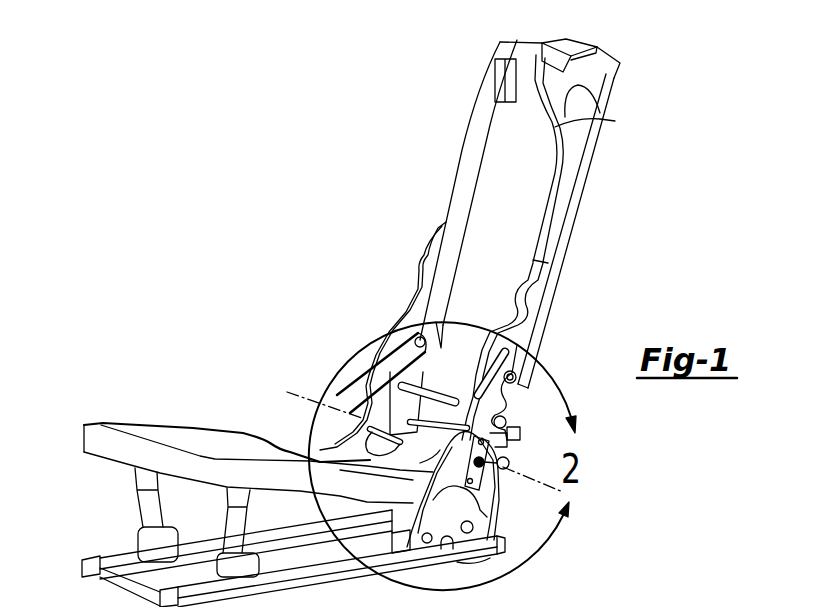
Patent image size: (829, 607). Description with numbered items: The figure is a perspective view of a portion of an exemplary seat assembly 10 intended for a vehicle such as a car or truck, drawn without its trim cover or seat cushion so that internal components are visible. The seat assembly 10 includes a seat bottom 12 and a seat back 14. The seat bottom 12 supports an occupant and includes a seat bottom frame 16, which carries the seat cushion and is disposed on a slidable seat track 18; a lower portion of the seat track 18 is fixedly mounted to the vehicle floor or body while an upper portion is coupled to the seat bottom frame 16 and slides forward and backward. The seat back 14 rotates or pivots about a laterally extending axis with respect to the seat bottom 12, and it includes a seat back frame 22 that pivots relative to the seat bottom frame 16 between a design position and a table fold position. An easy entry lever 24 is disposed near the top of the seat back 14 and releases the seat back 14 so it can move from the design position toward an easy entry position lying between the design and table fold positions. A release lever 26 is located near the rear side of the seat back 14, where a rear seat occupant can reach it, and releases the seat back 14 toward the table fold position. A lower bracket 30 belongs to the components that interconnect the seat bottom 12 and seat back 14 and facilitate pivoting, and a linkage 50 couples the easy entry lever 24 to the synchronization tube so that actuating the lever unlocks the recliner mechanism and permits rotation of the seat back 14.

The seat assembly 10 is at (295, 205).
The seat bottom 12 is at (67, 415).
The seat back 14 is at (625, 66).
The seat bottom frame 16 is at (191, 423).
The seat track 18 is at (82, 563).
The seat back frame 22 is at (470, 155).
The easy entry lever 24 is at (580, 40).
The release lever 26 is at (522, 437).
The lower bracket 30 is at (368, 382).
The linkage 50 is at (558, 126).